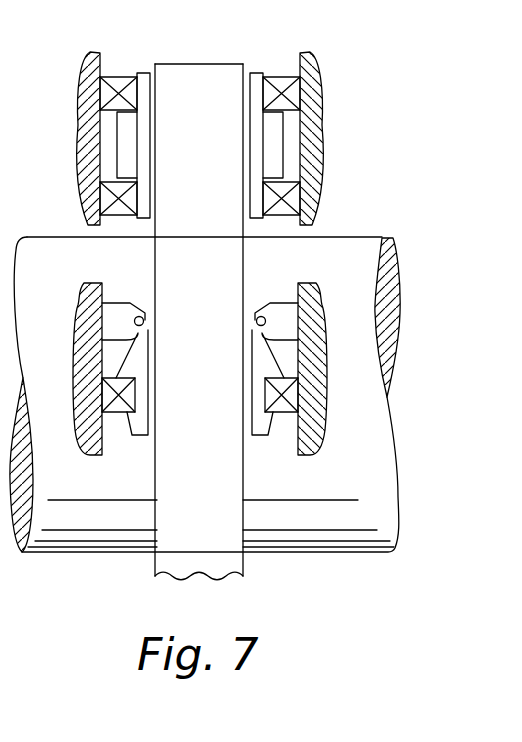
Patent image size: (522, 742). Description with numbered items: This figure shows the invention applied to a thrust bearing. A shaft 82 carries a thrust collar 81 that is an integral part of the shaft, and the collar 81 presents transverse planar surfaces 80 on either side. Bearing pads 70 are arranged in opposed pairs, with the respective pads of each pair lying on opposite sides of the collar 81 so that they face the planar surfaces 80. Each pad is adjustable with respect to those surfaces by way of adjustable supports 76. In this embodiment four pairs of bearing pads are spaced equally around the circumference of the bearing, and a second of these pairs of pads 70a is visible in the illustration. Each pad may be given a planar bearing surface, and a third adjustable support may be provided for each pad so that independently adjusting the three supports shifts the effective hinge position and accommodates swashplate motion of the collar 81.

The bearing pads 70 is at (258, 355).
The second pair of bearing pads 70a is at (262, 140).
The adjustable supports 76 is at (114, 414).
The transverse planar surfaces 80 is at (157, 263).
The thrust collar 81 is at (230, 557).
The shaft 82 is at (357, 238).